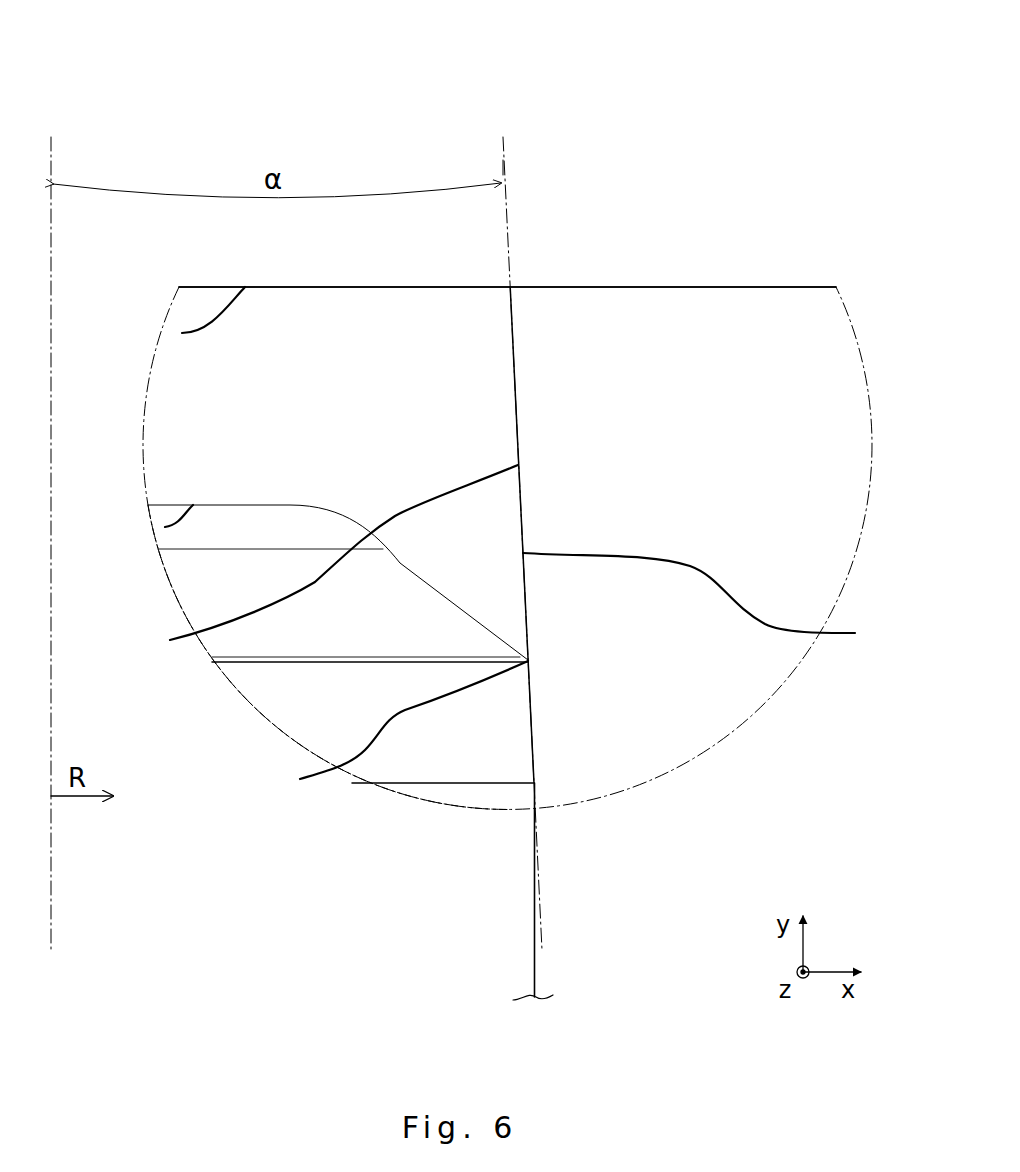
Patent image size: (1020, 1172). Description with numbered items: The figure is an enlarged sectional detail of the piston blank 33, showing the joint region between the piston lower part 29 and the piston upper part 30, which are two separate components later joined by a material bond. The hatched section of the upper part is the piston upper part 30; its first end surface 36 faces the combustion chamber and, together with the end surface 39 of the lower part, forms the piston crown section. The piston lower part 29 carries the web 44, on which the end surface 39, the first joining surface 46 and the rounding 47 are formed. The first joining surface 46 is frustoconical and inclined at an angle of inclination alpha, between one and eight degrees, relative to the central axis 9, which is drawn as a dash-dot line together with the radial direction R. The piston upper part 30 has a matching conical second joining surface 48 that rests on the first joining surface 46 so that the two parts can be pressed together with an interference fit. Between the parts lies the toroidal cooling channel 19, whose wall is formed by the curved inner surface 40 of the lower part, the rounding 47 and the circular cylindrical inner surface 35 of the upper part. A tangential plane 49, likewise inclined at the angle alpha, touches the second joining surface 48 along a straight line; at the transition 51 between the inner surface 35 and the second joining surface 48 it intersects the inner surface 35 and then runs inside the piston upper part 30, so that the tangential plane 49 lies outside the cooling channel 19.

The central axis 9 is at (51, 931).
The cooling channel 19 is at (320, 701).
The piston lower part 29 is at (246, 714).
The piston upper part 30 is at (820, 283).
The piston blank 33 is at (494, 96).
The inner surface 35 is at (533, 967).
The first end surface 36 is at (727, 287).
The end surface 39 is at (182, 333).
The inner surface 40 is at (165, 527).
The web 44 is at (320, 430).
The first joining surface 46 is at (170, 640).
The rounding 47 is at (300, 779).
The second joining surface 48 is at (850, 633).
The tangential plane 49 is at (503, 163).
The transition 51 is at (506, 785).